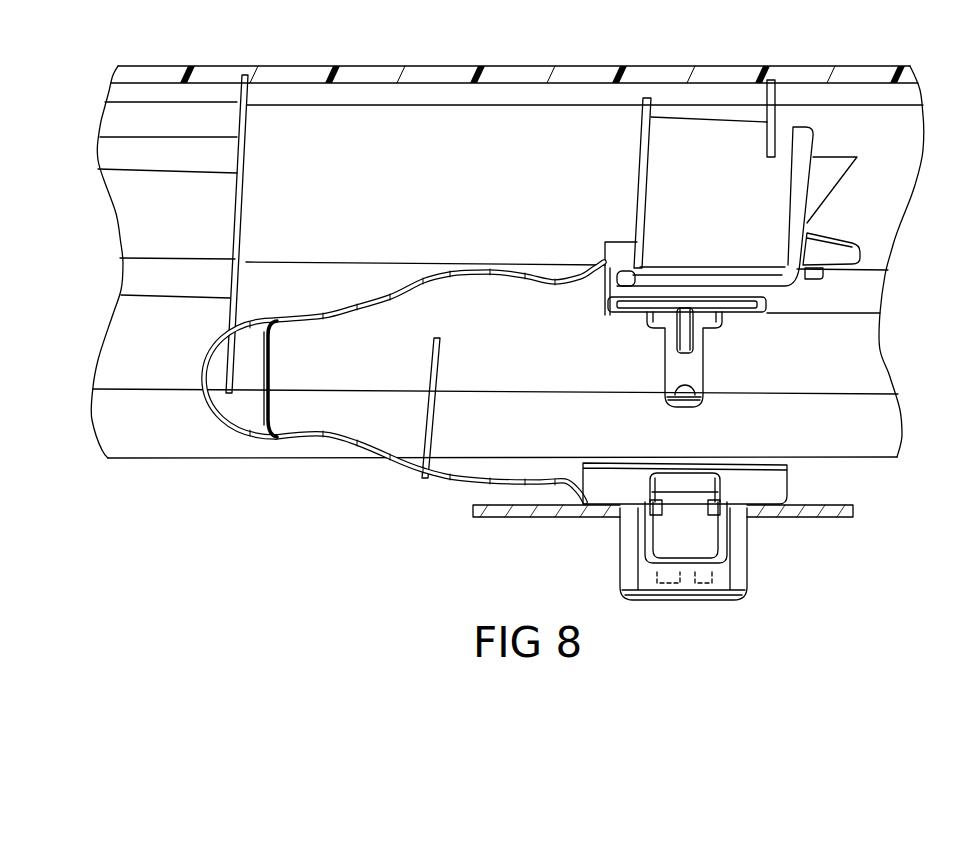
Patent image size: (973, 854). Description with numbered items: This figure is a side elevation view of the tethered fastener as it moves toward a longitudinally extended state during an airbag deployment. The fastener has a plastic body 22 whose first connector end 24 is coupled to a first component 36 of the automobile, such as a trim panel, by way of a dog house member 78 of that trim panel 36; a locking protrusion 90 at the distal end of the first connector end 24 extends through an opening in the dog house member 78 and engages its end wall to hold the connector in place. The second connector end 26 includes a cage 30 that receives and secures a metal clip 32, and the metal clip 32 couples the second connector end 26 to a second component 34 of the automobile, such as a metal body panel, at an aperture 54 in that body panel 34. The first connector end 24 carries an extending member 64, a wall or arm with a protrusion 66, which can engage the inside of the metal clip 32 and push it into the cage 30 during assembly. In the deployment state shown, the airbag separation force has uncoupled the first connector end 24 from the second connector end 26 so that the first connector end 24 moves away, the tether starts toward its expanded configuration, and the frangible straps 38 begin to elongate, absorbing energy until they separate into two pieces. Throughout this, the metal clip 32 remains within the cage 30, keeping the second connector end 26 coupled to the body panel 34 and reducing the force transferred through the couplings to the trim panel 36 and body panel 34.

The first component 36 is at (866, 88).
The dog house member 78 is at (773, 197).
The first connector end 24 is at (842, 251).
The locking protrusion 90 is at (817, 270).
The extending member 64 is at (692, 368).
The protrusion 66 is at (687, 403).
The plastic body 22 is at (423, 280).
The frangible strap 38 is at (272, 377).
The second connector end 26 is at (787, 490).
The aperture 54 is at (748, 518).
The cage 30 is at (628, 542).
The metal clip 32 is at (683, 545).
The second component 34 is at (837, 512).